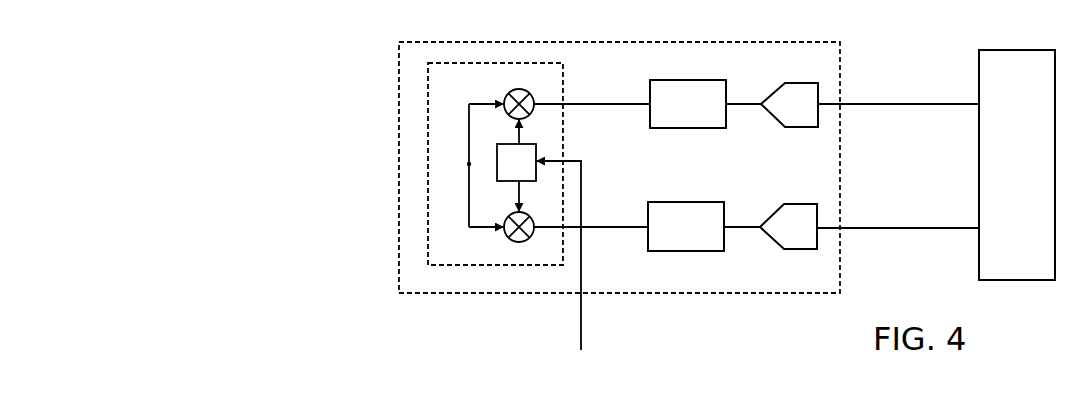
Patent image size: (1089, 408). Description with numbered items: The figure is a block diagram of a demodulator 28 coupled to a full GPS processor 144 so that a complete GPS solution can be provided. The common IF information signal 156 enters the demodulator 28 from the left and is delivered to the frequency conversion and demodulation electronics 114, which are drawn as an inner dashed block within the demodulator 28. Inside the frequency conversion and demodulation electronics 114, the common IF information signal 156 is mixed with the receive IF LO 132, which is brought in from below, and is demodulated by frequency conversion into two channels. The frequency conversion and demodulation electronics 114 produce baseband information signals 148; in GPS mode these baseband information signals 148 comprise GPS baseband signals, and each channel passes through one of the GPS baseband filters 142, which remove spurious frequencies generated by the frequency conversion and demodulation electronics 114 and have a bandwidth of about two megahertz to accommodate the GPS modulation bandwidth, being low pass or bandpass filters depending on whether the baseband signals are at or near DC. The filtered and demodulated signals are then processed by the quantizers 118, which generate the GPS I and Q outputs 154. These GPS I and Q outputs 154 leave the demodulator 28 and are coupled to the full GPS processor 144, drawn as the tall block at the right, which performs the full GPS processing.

The demodulator 28 is at (619, 167).
The frequency conversion and demodulation electronics 114 is at (495, 164).
The quantizers 118 is at (789, 166).
The receive IF LO 132 is at (567, 269).
The GPS baseband filters 142 is at (704, 165).
The full GPS processor 144 is at (1017, 165).
The baseband information signals 148 is at (592, 153).
The GPS I and Q outputs 154 is at (947, 103).
The common IF information signal 156 is at (469, 164).